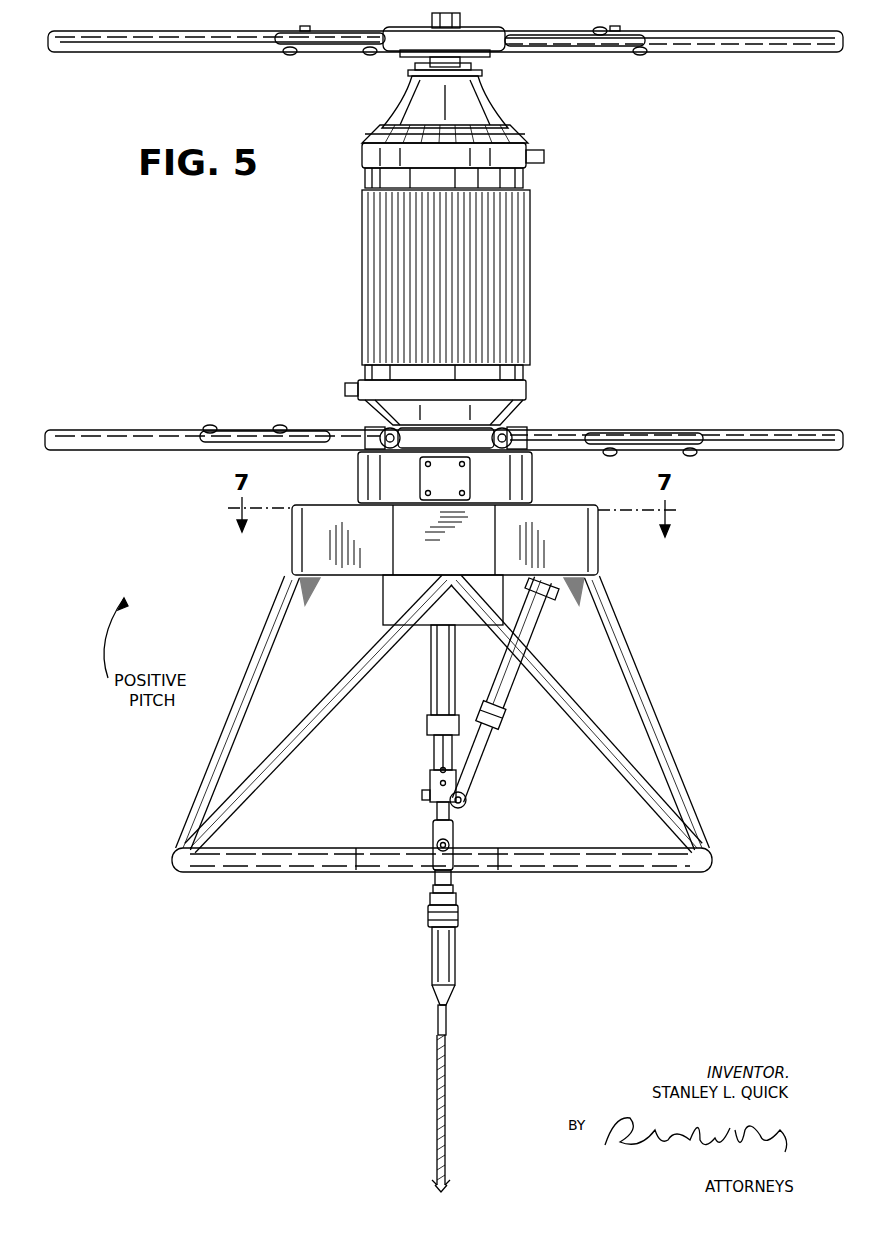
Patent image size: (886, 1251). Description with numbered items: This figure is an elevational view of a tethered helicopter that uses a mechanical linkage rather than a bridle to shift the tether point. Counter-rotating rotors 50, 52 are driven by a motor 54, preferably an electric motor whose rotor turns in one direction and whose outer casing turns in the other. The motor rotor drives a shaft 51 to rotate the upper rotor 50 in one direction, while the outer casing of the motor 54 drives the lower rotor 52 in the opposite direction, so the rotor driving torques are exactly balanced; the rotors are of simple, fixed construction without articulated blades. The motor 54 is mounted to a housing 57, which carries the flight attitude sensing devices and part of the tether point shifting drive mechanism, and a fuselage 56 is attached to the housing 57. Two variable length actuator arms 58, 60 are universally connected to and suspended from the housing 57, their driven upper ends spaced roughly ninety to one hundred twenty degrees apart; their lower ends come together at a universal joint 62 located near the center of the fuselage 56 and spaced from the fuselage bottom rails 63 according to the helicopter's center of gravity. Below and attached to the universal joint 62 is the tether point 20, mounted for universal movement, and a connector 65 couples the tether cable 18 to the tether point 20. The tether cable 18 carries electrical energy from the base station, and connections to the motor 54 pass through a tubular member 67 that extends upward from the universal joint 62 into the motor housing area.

The upper rotor 50 is at (688, 40).
The shaft 51 is at (460, 63).
The motor 54 is at (518, 252).
The lower rotor 52 is at (645, 428).
The housing 57 is at (590, 550).
The fuselage 56 is at (632, 620).
The fuselage bottom rails 63 is at (602, 862).
The variable length actuator arm 58 is at (520, 634).
The universal joint 62 is at (466, 801).
The variable length actuator arm 60 is at (430, 698).
The tubular member 67 is at (434, 754).
The tether point 20 is at (449, 845).
The connector 65 is at (453, 914).
The tether cable 18 is at (445, 1072).